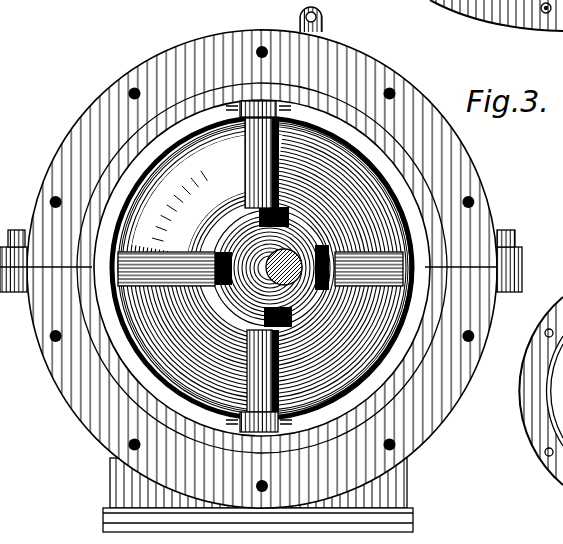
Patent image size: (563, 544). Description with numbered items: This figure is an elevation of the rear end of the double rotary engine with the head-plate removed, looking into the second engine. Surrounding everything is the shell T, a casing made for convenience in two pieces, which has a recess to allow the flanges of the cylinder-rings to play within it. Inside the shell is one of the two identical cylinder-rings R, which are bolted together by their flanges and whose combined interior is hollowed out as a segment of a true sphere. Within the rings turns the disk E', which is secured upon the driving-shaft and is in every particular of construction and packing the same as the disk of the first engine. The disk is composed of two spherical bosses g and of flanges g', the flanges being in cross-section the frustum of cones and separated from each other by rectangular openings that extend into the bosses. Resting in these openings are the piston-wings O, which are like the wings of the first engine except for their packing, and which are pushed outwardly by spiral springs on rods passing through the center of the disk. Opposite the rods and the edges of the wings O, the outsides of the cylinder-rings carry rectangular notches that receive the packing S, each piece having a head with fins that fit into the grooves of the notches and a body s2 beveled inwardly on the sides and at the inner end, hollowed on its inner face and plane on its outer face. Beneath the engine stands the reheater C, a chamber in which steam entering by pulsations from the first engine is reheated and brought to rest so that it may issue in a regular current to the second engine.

The shell T is at (261, 257).
The cylinder-ring R is at (262, 272).
The disk E' is at (264, 268).
The flange g' is at (264, 268).
The spherical boss g is at (270, 267).
The piston-wing O is at (260, 269).
The body of packing s2 is at (262, 265).
The packing S is at (259, 267).
The reheater C is at (258, 495).